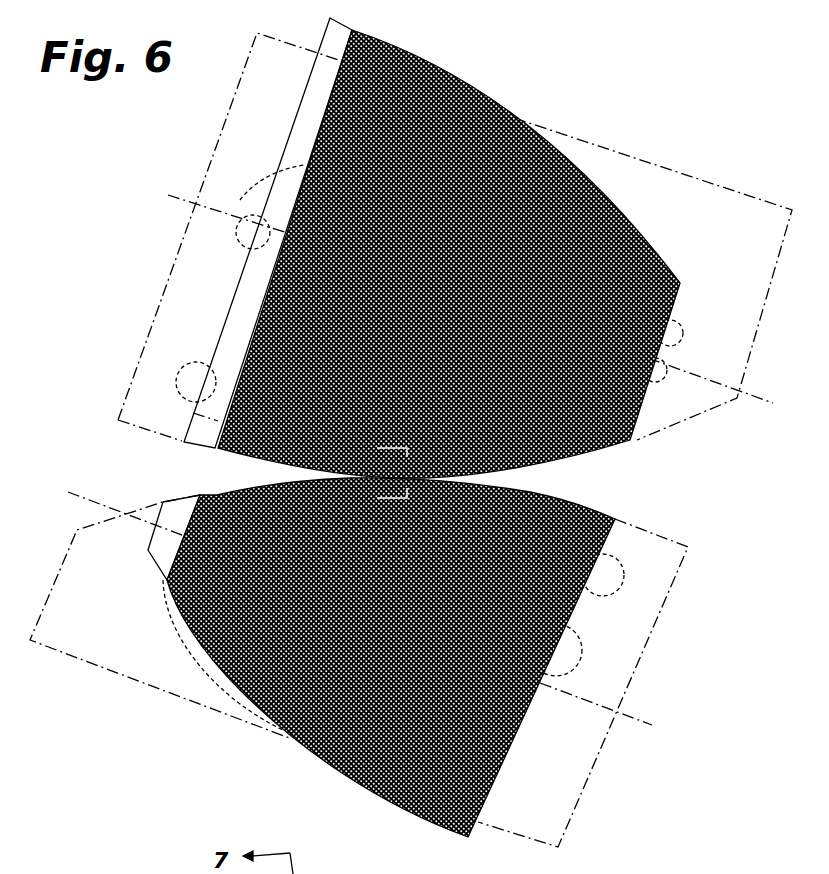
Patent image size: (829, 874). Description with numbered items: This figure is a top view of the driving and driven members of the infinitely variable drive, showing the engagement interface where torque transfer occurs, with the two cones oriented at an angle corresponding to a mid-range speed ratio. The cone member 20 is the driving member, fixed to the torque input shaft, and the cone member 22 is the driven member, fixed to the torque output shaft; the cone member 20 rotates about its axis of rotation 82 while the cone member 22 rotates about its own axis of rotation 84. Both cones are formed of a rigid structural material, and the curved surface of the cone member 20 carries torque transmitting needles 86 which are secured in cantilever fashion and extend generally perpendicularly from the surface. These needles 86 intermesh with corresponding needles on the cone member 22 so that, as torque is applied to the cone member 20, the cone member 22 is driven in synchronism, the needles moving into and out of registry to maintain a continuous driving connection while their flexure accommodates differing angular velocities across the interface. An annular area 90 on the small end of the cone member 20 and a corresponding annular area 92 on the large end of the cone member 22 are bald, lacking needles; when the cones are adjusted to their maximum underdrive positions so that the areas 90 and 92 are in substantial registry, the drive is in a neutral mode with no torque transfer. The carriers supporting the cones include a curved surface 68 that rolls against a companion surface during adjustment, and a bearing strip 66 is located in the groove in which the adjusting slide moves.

The cone member 20 is at (283, 730).
The cone member 22 is at (555, 147).
The bearing strip 66 is at (602, 520).
The curved surface 68 is at (662, 433).
The axis of rotation 82 is at (600, 704).
The axis of rotation 84 is at (707, 378).
The torque transmitting needles 86 is at (346, 873).
The annular area 90 is at (148, 550).
The annular area 92 is at (297, 145).